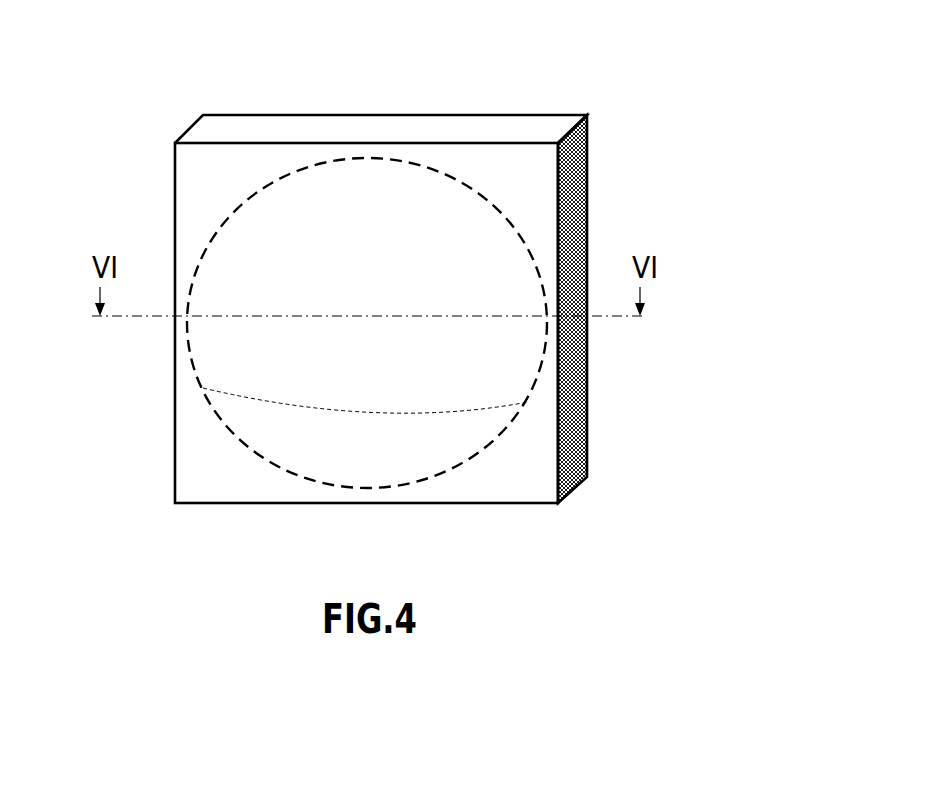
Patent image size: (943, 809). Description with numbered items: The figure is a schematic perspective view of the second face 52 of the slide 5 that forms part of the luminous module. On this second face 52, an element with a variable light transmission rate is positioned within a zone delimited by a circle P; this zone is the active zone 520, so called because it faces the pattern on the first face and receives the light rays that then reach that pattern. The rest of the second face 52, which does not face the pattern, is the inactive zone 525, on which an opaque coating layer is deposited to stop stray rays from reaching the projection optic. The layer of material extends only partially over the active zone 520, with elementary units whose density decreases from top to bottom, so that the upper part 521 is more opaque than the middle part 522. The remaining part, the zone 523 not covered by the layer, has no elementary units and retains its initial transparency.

The slide 5 is at (421, 273).
The second face 52 is at (443, 269).
The active zone 520 is at (287, 450).
The upper part 521 is at (468, 219).
The middle part 522 is at (468, 353).
The zone not covered by the layer of material 523 is at (450, 452).
The inactive zone 525 is at (537, 458).
The circle P is at (357, 157).